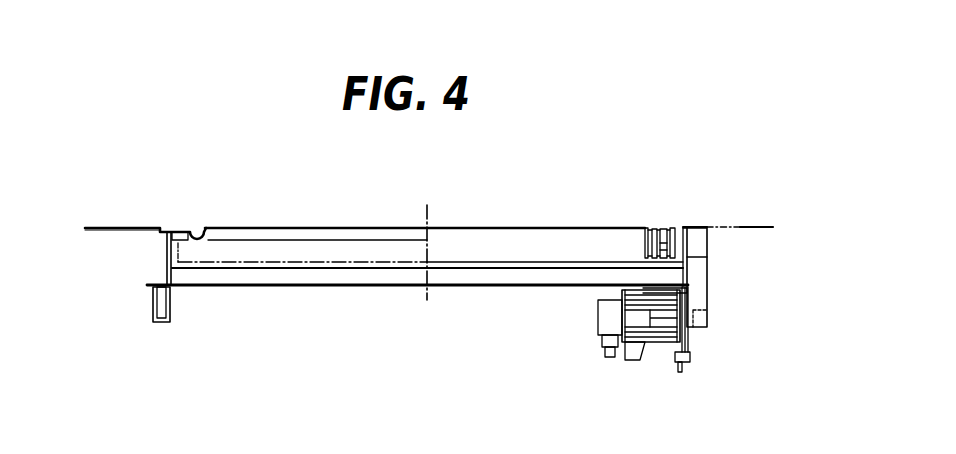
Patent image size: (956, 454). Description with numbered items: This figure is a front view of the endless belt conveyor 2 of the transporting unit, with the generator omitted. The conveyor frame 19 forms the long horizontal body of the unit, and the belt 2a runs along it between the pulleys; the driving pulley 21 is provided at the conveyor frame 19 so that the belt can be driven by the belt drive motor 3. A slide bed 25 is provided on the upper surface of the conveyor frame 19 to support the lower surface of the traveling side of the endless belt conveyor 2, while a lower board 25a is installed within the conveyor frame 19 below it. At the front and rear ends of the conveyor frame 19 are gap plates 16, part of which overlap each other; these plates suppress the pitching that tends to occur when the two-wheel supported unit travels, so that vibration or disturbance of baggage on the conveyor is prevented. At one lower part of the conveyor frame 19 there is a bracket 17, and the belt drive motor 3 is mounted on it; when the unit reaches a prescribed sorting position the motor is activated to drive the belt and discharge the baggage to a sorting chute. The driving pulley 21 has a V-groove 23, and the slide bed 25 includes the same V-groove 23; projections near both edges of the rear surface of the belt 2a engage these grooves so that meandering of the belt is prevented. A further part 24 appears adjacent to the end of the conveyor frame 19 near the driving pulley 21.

The endless belt conveyor 2 is at (612, 215).
The belt 2a is at (255, 226).
The belt drive motor 3 is at (655, 340).
The gap plates 16 is at (110, 226).
The bracket 17 is at (692, 340).
The conveyor frame 19 is at (158, 285).
The driving pulley 21 is at (521, 236).
The V-groove 23 is at (655, 226).
The holder 24 is at (700, 272).
The slide bed 25 is at (310, 241).
The lower board 25a is at (207, 293).